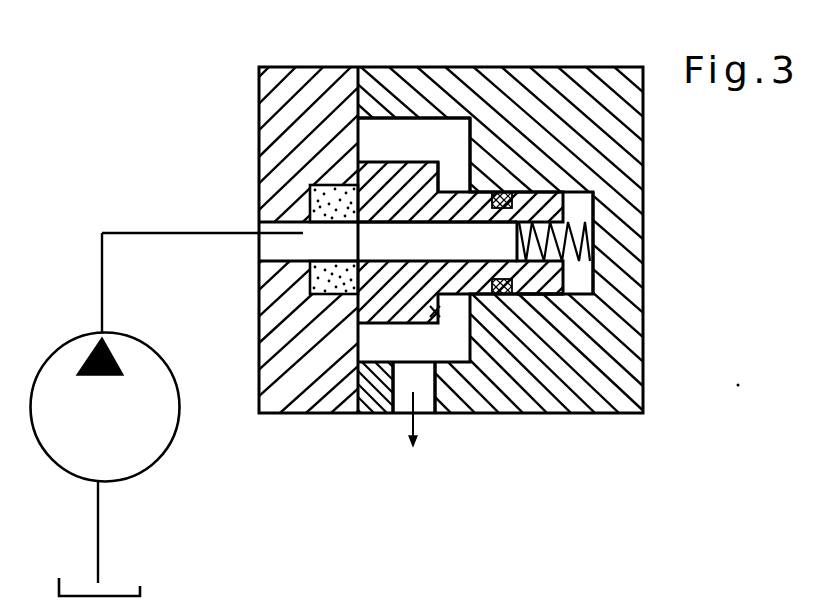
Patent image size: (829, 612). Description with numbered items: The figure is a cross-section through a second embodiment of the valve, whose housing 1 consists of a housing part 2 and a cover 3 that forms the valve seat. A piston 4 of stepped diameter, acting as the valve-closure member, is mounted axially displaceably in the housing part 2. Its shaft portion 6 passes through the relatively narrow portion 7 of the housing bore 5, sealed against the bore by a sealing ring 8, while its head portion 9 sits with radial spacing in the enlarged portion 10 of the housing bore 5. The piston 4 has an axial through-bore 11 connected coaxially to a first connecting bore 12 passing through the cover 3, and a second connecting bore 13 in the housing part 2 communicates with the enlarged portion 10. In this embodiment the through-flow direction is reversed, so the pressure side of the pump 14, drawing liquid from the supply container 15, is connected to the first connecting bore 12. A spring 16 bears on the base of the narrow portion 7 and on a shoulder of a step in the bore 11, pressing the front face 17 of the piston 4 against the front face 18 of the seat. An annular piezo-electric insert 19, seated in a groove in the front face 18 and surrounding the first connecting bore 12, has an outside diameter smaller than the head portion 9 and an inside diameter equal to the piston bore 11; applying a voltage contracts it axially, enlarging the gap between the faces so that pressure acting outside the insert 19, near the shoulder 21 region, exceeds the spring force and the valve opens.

The housing 1 is at (387, 58).
The housing part 2 is at (630, 351).
The cover 3 is at (268, 102).
The piston 4 is at (459, 257).
The housing bore 5 is at (432, 155).
The shaft portion 6 is at (553, 292).
The narrow portion of the housing bore 7 is at (596, 286).
The seal ring 8 is at (506, 191).
The head portion 9 is at (442, 318).
The enlarged portion of the housing bore 10 is at (402, 116).
The axial through-bore 11 is at (393, 224).
The first connecting bore 12 is at (264, 222).
The second connecting bore 13 is at (433, 398).
The pump 14 is at (162, 457).
The supply container 15 is at (140, 591).
The spring 16 is at (578, 223).
The front face of the piston 17 is at (355, 172).
The front face of the valve seat 18 is at (365, 345).
The insert 19 is at (308, 270).
The piston shoulder 21 is at (443, 167).